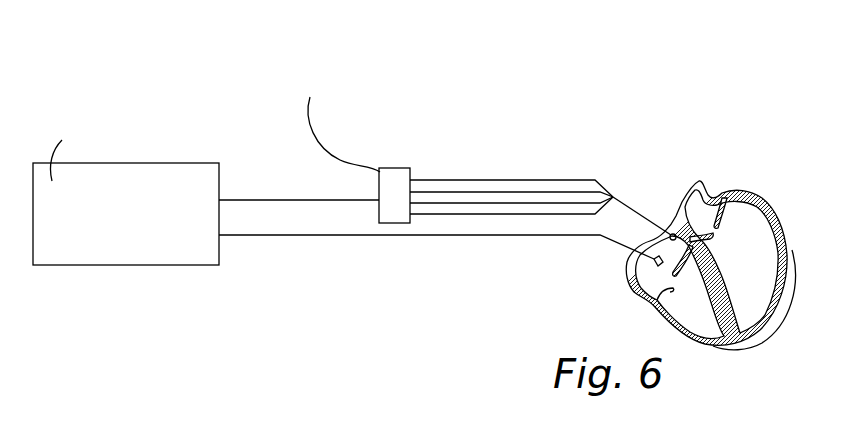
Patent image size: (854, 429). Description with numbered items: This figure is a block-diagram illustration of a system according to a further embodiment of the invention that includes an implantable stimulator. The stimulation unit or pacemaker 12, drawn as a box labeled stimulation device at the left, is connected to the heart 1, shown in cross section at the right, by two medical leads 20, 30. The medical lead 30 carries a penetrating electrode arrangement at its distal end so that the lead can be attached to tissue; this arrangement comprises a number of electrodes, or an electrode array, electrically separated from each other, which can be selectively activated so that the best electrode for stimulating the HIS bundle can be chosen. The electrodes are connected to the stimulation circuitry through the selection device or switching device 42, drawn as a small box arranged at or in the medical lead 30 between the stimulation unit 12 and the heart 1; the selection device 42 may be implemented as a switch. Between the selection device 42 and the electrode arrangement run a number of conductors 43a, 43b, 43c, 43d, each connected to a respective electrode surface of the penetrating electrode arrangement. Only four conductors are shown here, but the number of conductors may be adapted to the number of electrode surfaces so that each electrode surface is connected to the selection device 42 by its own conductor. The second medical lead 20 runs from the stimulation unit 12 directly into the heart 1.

The stimulation unit 12 is at (123, 265).
The selection device 42 is at (390, 168).
The conductor 43a is at (453, 179).
The conductor 43b is at (500, 191).
The conductor 43c is at (545, 202).
The conductor 43d is at (450, 215).
The medical lead 30 is at (640, 214).
The medical lead 20 is at (532, 236).
The heart 1 is at (670, 185).